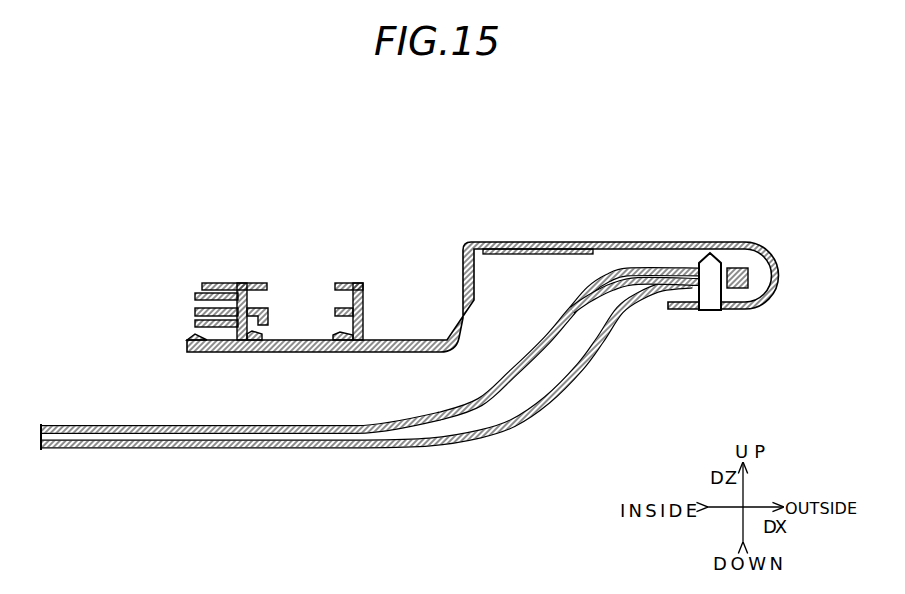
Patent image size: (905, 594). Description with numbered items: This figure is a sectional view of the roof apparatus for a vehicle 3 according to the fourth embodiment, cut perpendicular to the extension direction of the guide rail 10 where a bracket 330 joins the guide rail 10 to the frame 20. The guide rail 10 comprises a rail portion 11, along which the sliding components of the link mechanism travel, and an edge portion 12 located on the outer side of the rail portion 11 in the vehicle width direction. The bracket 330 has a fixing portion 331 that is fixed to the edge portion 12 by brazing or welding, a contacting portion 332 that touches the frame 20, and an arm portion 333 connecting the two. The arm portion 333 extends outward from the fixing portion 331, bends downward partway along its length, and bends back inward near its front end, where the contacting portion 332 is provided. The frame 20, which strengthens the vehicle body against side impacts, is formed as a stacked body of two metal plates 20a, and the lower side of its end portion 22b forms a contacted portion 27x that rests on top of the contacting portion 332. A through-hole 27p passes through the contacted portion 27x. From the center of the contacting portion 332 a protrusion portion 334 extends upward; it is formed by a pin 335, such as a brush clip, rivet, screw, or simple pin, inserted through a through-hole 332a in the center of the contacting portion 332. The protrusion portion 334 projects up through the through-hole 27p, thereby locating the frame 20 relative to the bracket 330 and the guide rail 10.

The roof apparatus for a vehicle 3 is at (347, 192).
The guide rail 10 is at (176, 353).
The rail portion 11 is at (183, 362).
The edge portion 12 is at (523, 255).
The frame 20 is at (579, 389).
The metal plate 20a is at (585, 352).
The end portion 22b is at (749, 289).
The through-hole 27p is at (717, 257).
The contacted portion 27x is at (640, 291).
The bracket 330 is at (645, 183).
The fixing portion 331 is at (537, 242).
The contacting portion 332 is at (672, 311).
The through-hole 332a is at (731, 310).
The arm portion 333 is at (779, 270).
The protrusion portion 334 is at (699, 260).
The pin 335 is at (713, 316).